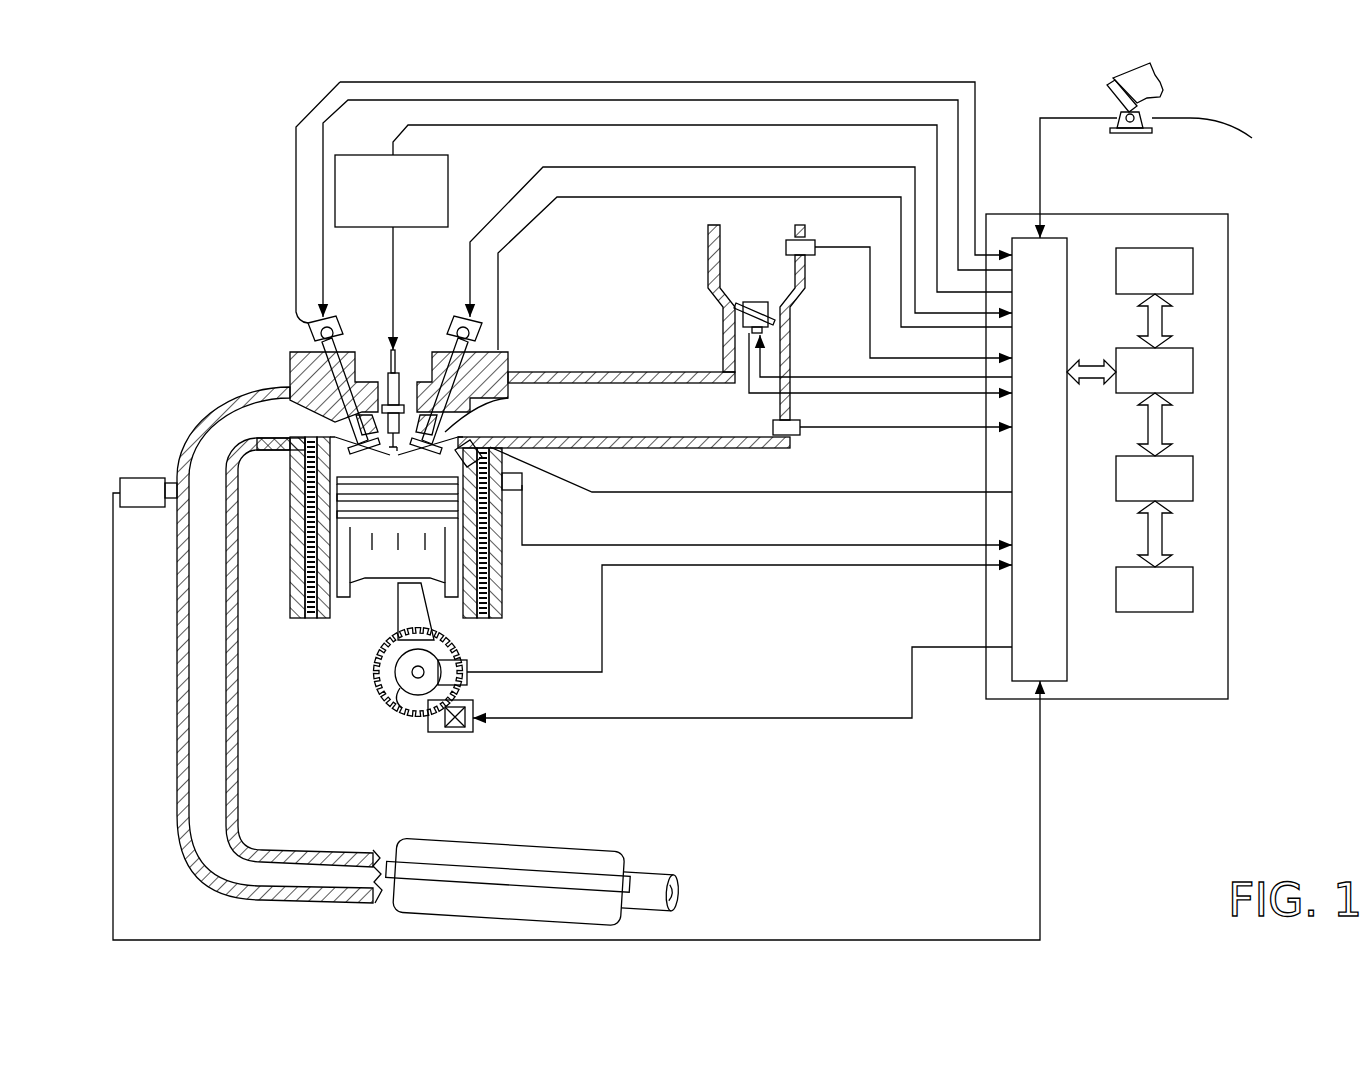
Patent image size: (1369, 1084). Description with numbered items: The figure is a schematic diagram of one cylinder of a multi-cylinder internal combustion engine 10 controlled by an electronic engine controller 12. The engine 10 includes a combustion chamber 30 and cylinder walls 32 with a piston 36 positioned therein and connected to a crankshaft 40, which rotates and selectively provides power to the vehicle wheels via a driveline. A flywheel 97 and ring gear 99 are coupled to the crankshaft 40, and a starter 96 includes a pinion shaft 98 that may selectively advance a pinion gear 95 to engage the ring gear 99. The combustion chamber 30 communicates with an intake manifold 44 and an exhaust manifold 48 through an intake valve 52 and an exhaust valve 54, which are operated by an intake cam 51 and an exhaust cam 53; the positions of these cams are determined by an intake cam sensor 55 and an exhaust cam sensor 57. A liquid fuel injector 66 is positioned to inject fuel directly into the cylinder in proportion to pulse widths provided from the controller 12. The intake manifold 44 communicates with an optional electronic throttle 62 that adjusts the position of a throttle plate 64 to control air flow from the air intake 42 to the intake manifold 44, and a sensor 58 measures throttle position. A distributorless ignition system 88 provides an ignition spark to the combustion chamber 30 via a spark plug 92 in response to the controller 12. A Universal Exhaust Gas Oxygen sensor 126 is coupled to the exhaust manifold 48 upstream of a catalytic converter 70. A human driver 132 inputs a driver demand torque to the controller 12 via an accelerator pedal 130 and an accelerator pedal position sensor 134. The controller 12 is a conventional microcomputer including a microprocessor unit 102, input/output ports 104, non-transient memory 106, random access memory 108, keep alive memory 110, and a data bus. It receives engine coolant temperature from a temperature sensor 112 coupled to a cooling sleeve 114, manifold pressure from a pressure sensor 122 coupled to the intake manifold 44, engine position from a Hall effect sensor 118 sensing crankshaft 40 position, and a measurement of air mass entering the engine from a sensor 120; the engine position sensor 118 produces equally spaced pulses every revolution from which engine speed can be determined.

The internal combustion engine 10 is at (222, 302).
The electronic engine controller 12 is at (1228, 214).
The combustion chamber 30 is at (340, 545).
The cylinder walls 32 is at (331, 612).
The piston 36 is at (380, 565).
The crankshaft 40 is at (400, 703).
The air intake 42 is at (740, 278).
The intake manifold 44 is at (674, 423).
The exhaust manifold 48 is at (240, 431).
The intake cam 51 is at (462, 318).
The intake valve 52 is at (466, 416).
The exhaust cam 53 is at (337, 317).
The exhaust valve 54 is at (330, 437).
The intake cam sensor 55 is at (480, 343).
The exhaust cam sensor 57 is at (312, 342).
The throttle position sensor 58 is at (722, 335).
The electronic throttle 62 is at (770, 305).
The throttle plate 64 is at (737, 308).
The liquid fuel injector 66 is at (512, 452).
The catalytic converter 70 is at (413, 842).
The distributorless ignition system 88 is at (352, 155).
The spark plug 92 is at (388, 365).
The pinion gear 95 is at (460, 735).
The starter 96 is at (470, 733).
The flywheel 97 is at (393, 678).
The pinion shaft 98 is at (448, 733).
The ring gear 99 is at (413, 717).
The microprocessor unit 102 is at (1195, 373).
The input/output ports 104 is at (1068, 247).
The non-transient memory 106 is at (1195, 268).
The random access memory 108 is at (1195, 480).
The keep alive memory 110 is at (1195, 590).
The temperature sensor 112 is at (522, 490).
The cooling sleeve 114 is at (483, 567).
The Hall effect sensor 118 is at (467, 665).
The air mass sensor 120 is at (805, 256).
The pressure sensor 122 is at (795, 436).
The Universal Exhaust Gas Oxygen (UEGO) sensor 126 is at (122, 480).
The accelerator pedal 130 is at (1110, 93).
The human driver 132 is at (1163, 83).
The accelerator pedal position sensor 134 is at (1168, 175).